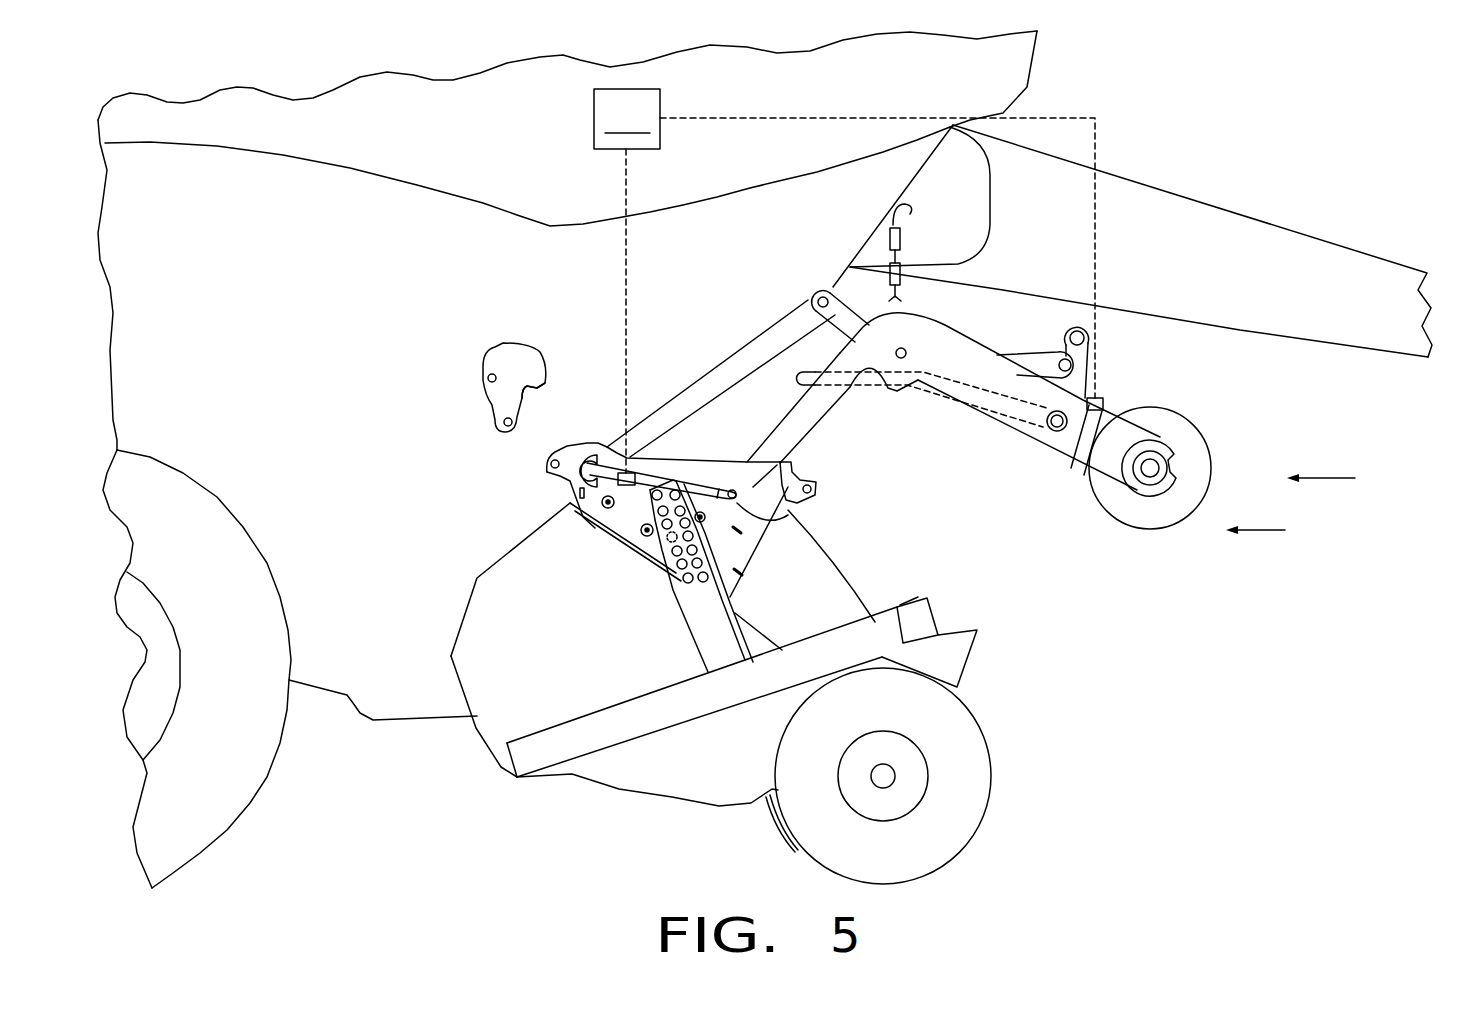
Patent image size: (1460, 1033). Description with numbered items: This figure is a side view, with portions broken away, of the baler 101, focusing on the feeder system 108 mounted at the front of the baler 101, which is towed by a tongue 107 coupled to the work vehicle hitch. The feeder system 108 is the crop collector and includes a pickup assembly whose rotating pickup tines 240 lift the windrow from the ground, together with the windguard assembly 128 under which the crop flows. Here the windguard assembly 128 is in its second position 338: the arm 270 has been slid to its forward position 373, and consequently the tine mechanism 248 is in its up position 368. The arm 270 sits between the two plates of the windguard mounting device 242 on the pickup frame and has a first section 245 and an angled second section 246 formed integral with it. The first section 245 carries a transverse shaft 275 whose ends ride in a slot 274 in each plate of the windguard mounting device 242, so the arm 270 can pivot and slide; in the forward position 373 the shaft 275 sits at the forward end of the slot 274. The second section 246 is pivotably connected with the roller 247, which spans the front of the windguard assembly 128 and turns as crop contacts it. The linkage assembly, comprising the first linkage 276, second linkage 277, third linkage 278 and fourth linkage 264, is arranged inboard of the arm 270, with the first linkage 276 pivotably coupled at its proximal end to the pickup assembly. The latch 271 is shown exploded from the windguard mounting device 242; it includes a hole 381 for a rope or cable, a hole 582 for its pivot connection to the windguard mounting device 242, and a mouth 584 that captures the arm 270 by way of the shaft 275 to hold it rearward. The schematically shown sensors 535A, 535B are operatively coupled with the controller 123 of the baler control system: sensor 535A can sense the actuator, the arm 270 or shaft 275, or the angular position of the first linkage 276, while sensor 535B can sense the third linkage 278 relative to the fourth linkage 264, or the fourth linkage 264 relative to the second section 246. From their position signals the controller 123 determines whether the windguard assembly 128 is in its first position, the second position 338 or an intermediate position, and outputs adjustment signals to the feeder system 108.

The baler 101 is at (1195, 143).
The tongue 107 is at (1373, 260).
The feeder system 108 is at (1175, 704).
The controller 123 is at (844, 281).
The windguard assembly 128 is at (1344, 479).
The pickup tines 240 is at (795, 849).
The windguard mounting device 242 is at (740, 550).
The first section 245 is at (797, 430).
The second section 246 is at (1027, 428).
The roller 247 is at (1193, 440).
The tine mechanism 248 is at (870, 393).
The fourth linkage 264 is at (1082, 352).
The arm 270 is at (947, 343).
The latch 271 is at (502, 343).
The slot 274 is at (663, 465).
The shaft 275 is at (740, 527).
The first linkage 276 is at (747, 350).
The second linkage 277 is at (835, 293).
The third linkage 278 is at (1043, 362).
The second position 338 is at (1280, 531).
The up position 368 is at (797, 364).
The forward position 373 is at (1073, 460).
The hole 381 is at (483, 366).
The sensor 535A is at (623, 488).
The sensor 535B is at (1107, 403).
The hole 582 is at (545, 468).
The mouth 584 is at (527, 390).